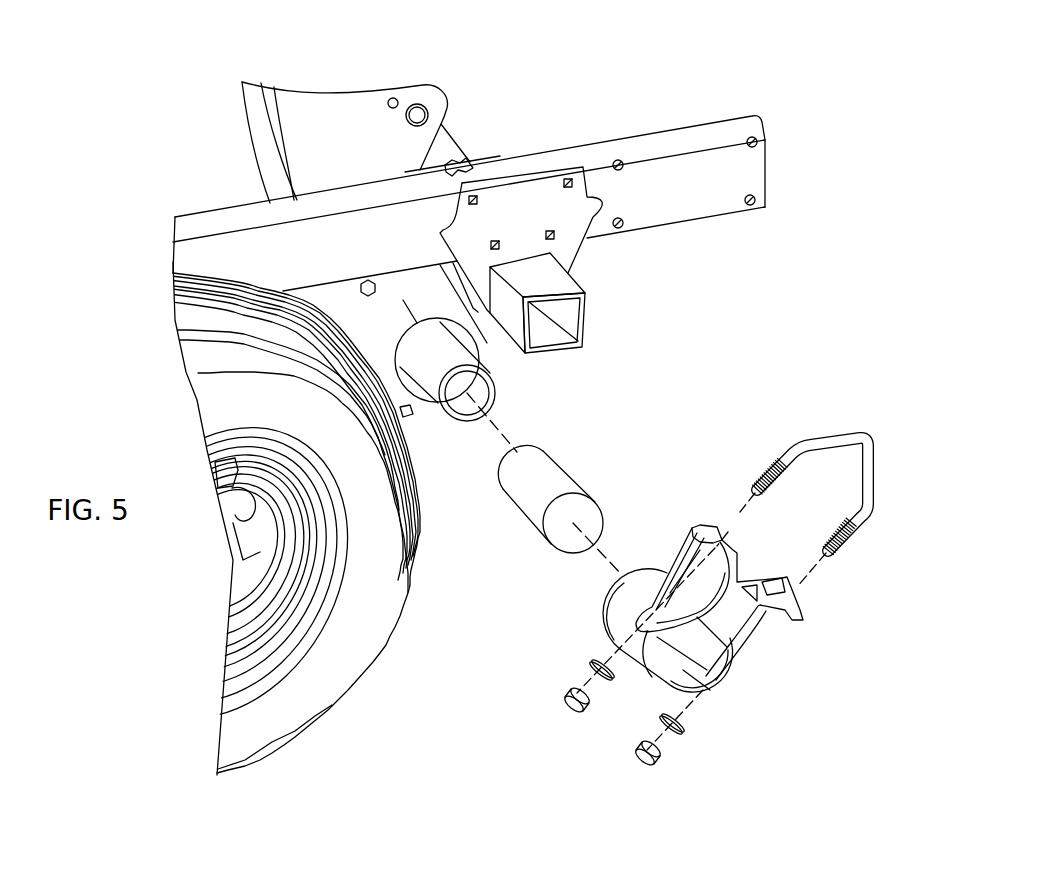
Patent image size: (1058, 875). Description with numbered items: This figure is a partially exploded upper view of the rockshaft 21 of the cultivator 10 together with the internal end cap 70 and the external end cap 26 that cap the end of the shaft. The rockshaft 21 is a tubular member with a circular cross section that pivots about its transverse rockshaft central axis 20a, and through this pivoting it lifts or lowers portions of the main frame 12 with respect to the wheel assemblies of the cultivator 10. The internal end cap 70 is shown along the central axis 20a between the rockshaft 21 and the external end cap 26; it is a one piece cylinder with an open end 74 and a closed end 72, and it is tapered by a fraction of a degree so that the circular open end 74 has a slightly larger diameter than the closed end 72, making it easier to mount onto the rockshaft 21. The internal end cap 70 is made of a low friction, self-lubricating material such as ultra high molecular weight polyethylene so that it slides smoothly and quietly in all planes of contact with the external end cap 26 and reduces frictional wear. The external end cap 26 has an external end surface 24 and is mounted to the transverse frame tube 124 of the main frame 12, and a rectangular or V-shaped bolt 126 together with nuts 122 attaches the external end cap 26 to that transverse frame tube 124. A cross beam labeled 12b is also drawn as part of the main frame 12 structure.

The cultivator 10 is at (633, 90).
The main frame 12 is at (552, 283).
The cross beam 12b is at (743, 128).
The rockshaft 21 is at (432, 357).
The transverse rockshaft central axis 20a is at (495, 442).
The internal end cap 70 is at (555, 487).
The closed end 72 is at (593, 517).
The open end 74 is at (537, 443).
The external end surface 24 is at (657, 605).
The external end cap 26 is at (627, 628).
The transverse frame tube 124 is at (703, 527).
The rectangular or V-shaped bolt 126 is at (830, 443).
The nuts 122 is at (567, 697).